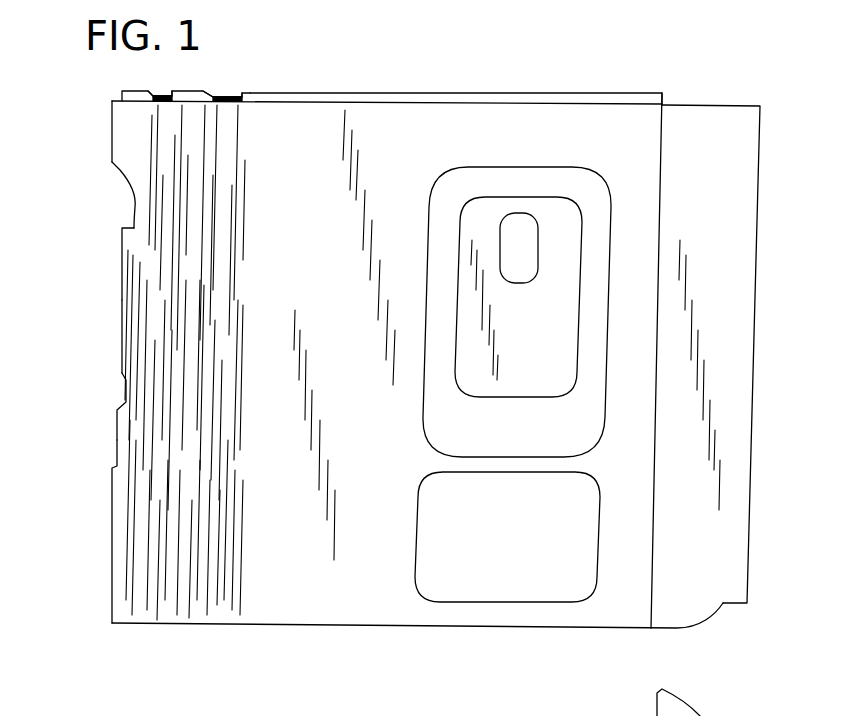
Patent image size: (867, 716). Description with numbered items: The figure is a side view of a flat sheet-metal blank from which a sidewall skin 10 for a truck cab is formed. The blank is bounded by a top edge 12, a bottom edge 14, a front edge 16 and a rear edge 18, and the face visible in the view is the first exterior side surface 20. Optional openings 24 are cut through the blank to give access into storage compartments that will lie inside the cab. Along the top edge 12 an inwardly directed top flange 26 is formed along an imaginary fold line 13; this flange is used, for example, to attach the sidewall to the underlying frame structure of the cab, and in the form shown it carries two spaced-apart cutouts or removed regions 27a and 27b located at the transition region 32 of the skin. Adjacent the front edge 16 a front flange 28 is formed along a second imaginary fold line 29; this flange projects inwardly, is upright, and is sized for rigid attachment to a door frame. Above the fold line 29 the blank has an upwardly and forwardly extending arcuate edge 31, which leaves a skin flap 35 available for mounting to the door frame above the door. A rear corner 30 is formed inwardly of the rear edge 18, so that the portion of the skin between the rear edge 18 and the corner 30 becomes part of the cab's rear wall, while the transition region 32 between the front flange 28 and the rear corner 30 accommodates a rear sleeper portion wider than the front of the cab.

The sidewall skin 10 is at (92, 377).
The top edge 12 is at (413, 103).
The fold line 13 is at (285, 101).
The bottom edge 14 is at (448, 626).
The front edge 16 is at (117, 467).
The rear edge 18 is at (757, 225).
The first exterior side surface 20 is at (262, 524).
The openings 24 is at (572, 425).
The top flange 26 is at (527, 94).
The cutout 27a is at (258, 84).
The cutout 27b is at (183, 81).
The front flange 28 is at (122, 425).
The fold line 29 is at (122, 317).
The rear corner 30 is at (657, 353).
The arcuate edge 31 is at (130, 185).
The transition region 32 is at (175, 257).
The skin flap 35 is at (117, 136).